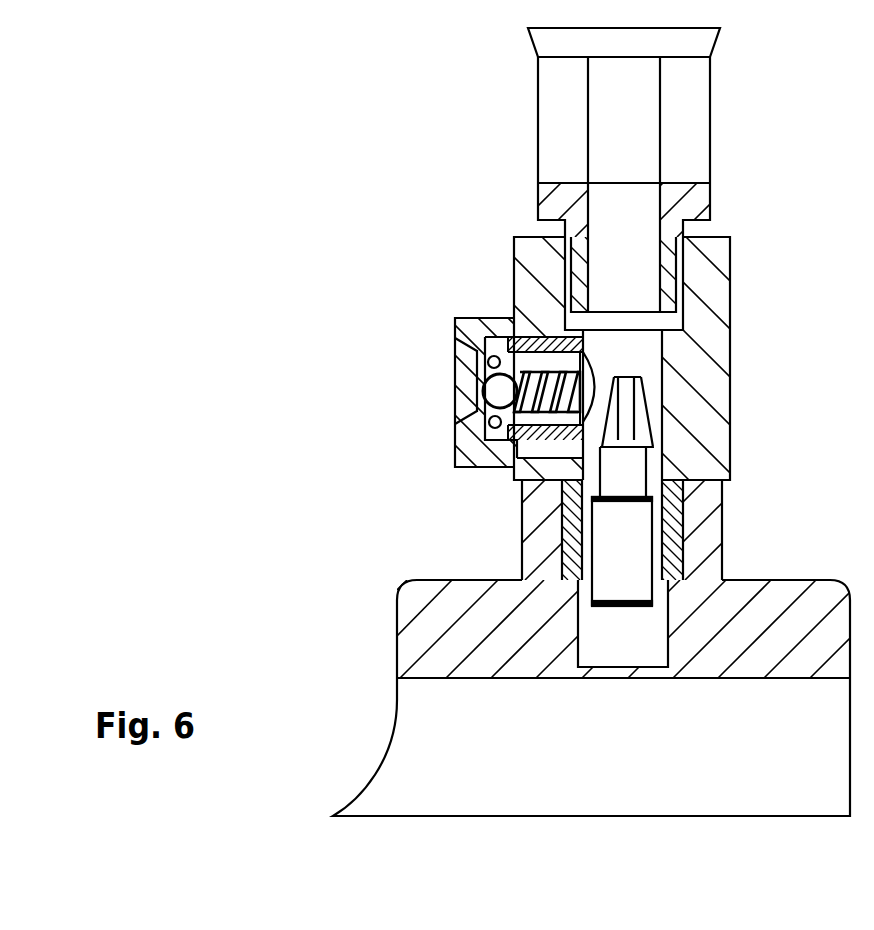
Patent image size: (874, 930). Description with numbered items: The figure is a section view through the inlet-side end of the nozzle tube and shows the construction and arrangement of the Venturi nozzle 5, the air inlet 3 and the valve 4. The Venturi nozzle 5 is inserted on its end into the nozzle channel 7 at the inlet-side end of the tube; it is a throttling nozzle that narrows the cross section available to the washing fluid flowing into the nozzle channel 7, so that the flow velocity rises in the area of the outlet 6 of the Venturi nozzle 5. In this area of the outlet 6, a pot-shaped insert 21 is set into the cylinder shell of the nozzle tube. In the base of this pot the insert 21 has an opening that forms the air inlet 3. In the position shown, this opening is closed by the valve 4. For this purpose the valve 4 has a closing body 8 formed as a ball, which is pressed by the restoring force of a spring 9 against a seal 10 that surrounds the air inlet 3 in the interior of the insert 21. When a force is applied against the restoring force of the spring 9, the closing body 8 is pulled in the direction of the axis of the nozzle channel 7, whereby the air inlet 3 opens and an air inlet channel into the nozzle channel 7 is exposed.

The air inlet 3 is at (480, 403).
The valve 4 is at (490, 443).
The Venturi nozzle 5 is at (643, 443).
The outlet 6 is at (628, 372).
The nozzle channel 7 is at (630, 295).
The closing body 8 is at (468, 355).
The spring 9 is at (520, 362).
The seal 10 is at (492, 424).
The insert 21 is at (477, 340).